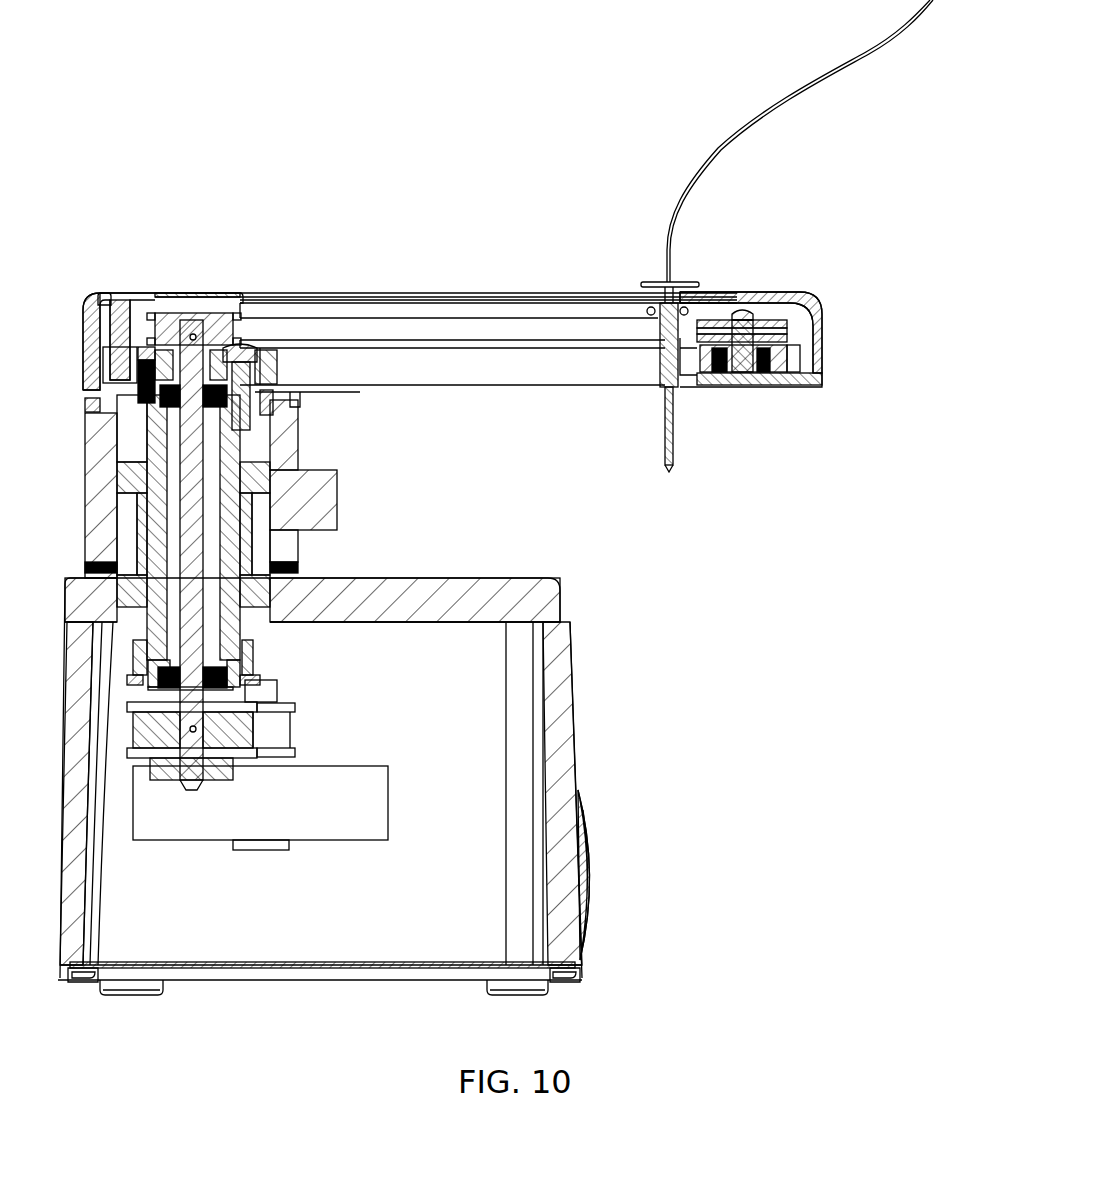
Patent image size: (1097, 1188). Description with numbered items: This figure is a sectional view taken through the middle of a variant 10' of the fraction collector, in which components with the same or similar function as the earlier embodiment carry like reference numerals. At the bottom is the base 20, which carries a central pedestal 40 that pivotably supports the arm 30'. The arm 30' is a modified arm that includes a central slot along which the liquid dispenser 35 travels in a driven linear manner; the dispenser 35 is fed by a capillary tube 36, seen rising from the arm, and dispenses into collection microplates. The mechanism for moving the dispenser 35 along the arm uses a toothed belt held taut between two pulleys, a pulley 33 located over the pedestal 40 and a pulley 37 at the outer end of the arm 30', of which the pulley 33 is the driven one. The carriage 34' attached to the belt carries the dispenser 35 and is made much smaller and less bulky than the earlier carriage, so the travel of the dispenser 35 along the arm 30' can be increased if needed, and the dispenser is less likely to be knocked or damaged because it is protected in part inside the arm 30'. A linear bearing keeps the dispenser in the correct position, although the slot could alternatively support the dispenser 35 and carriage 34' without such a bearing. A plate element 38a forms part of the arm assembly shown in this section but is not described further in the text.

The variant of the fraction collector 10' is at (486, 497).
The base 20 is at (578, 762).
The arm 30' is at (508, 238).
The pulley 33 is at (158, 295).
The carriage 34' is at (613, 307).
The liquid dispenser 35 is at (675, 423).
The capillary tube 36 is at (800, 141).
The pulley 37 is at (772, 317).
The platform disc 38a is at (350, 328).
The central pedestal 40 is at (87, 527).